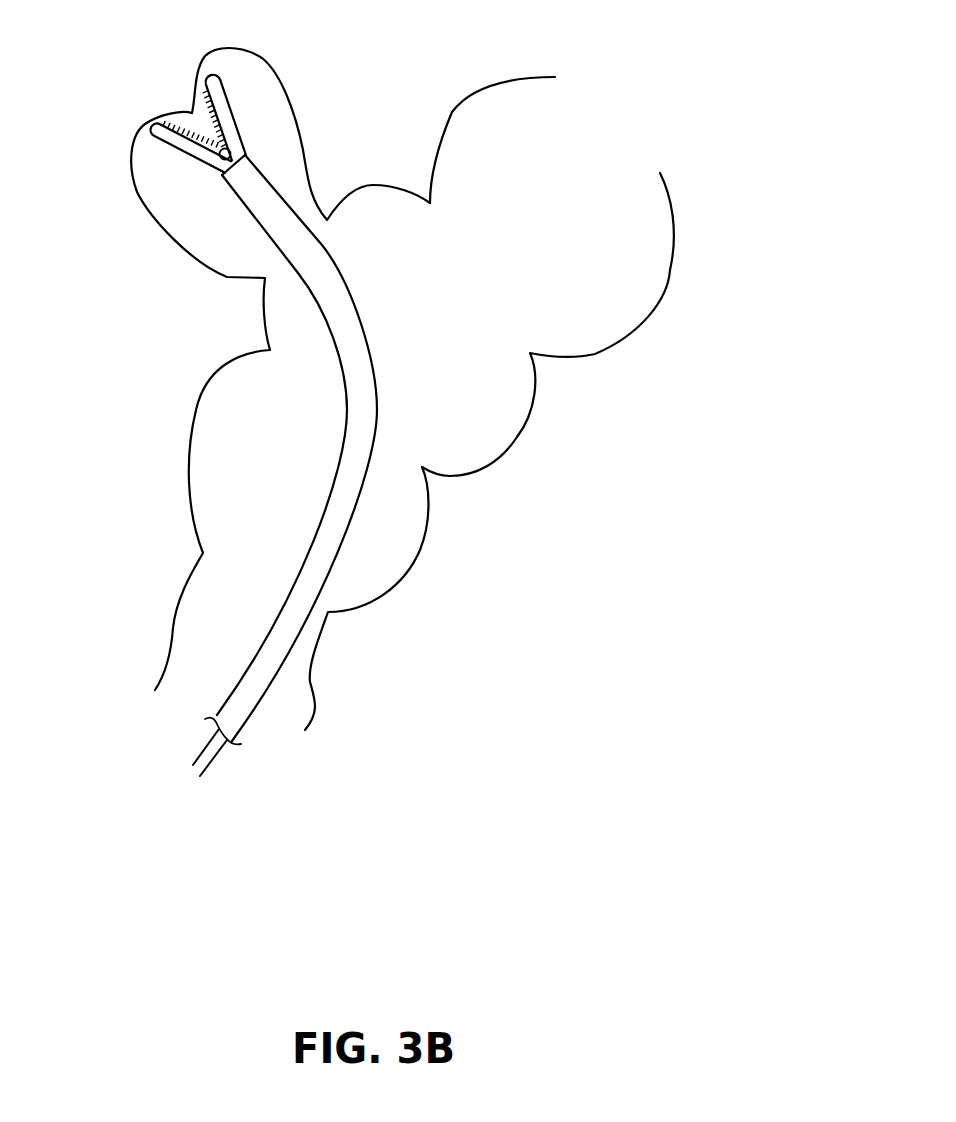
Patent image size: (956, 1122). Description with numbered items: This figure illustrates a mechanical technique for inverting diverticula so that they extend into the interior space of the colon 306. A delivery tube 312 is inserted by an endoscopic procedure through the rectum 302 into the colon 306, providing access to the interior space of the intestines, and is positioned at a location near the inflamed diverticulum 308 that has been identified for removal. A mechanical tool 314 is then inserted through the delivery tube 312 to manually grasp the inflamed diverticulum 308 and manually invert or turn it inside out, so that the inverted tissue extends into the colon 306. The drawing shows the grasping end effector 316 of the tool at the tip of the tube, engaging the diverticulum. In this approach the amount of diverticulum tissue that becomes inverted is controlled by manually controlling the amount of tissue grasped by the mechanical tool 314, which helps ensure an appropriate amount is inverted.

The rectum 302 is at (146, 619).
The colon 306 is at (515, 68).
The inflamed diverticulum 308 is at (266, 48).
The delivery tube 312 is at (376, 312).
The mechanical tool 314 is at (214, 767).
The jaws / end effector 316 is at (180, 118).